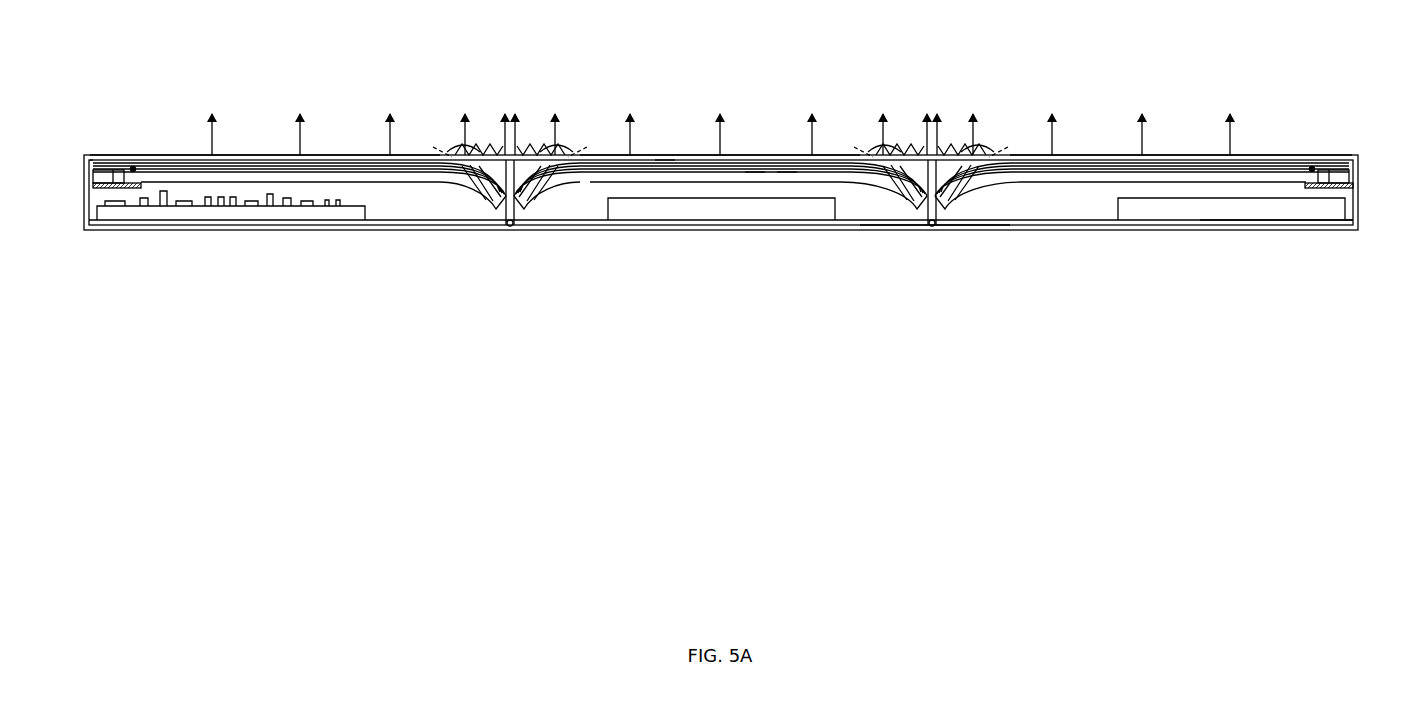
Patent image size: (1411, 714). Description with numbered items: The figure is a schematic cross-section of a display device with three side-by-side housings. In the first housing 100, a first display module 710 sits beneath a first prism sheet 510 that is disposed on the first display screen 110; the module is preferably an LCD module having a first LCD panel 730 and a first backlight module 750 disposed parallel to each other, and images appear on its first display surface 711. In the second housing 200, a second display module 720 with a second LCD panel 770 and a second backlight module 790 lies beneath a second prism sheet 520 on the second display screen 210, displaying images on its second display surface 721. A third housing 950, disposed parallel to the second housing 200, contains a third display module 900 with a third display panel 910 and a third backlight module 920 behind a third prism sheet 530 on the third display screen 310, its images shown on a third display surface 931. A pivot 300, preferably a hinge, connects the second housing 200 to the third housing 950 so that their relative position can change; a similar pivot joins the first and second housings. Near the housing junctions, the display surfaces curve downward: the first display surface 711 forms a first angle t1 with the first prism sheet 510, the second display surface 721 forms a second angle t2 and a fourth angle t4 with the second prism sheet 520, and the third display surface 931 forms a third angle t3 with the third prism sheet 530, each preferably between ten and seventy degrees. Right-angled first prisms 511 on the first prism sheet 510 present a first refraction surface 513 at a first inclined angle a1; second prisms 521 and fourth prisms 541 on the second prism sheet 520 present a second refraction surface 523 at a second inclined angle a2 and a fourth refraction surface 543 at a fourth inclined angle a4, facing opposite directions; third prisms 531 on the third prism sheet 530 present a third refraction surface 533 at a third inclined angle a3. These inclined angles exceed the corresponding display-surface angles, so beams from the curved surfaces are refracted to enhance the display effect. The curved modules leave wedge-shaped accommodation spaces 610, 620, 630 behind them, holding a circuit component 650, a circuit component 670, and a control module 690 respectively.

The first housing 100 is at (107, 229).
The first display screen 110 is at (233, 136).
The second housing 200 is at (863, 227).
The second display screen 210 is at (653, 133).
The pivot 300 is at (512, 229).
The third display screen 310 is at (1177, 133).
The first prism sheet 510 is at (335, 163).
The first prism 511 is at (460, 150).
The first refraction surface 513 is at (457, 147).
The second prism sheet 520 is at (705, 158).
The second prism 521 is at (560, 150).
The second refraction surface 523 is at (562, 147).
The third prism sheet 530 is at (1070, 158).
The third prism 531 is at (1003, 148).
The third refraction surface 533 is at (985, 147).
The fourth prism 541 is at (880, 150).
The fourth refraction surface 543 is at (880, 147).
The accommodation space 610 is at (433, 209).
The accommodation space 620 is at (588, 209).
The accommodation space 630 is at (1028, 209).
The circuit component 650 is at (268, 216).
The circuit component 670 is at (752, 213).
The control module 690 is at (1195, 213).
The first display module 710 is at (98, 99).
The first display surface 711 is at (178, 161).
The second display module 720 is at (755, 38).
The second display surface 721 is at (665, 158).
The first LCD panel 730 is at (160, 162).
The first backlight module 750 is at (123, 170).
The second LCD panel 770 is at (755, 158).
The second backlight module 790 is at (787, 158).
The third display module 900 is at (1347, 93).
The third display panel 910 is at (1290, 158).
The third backlight module 920 is at (1326, 158).
The third display surface 931 is at (1264, 161).
The third housing 950 is at (1307, 225).
The first inclined angle a1 is at (460, 154).
The second inclined angle a2 is at (560, 154).
The third inclined angle a3 is at (982, 154).
The fourth inclined angle a4 is at (880, 154).
The first angle t1 is at (495, 154).
The second angle t2 is at (522, 154).
The third angle t3 is at (943, 154).
The fourth angle t4 is at (916, 154).